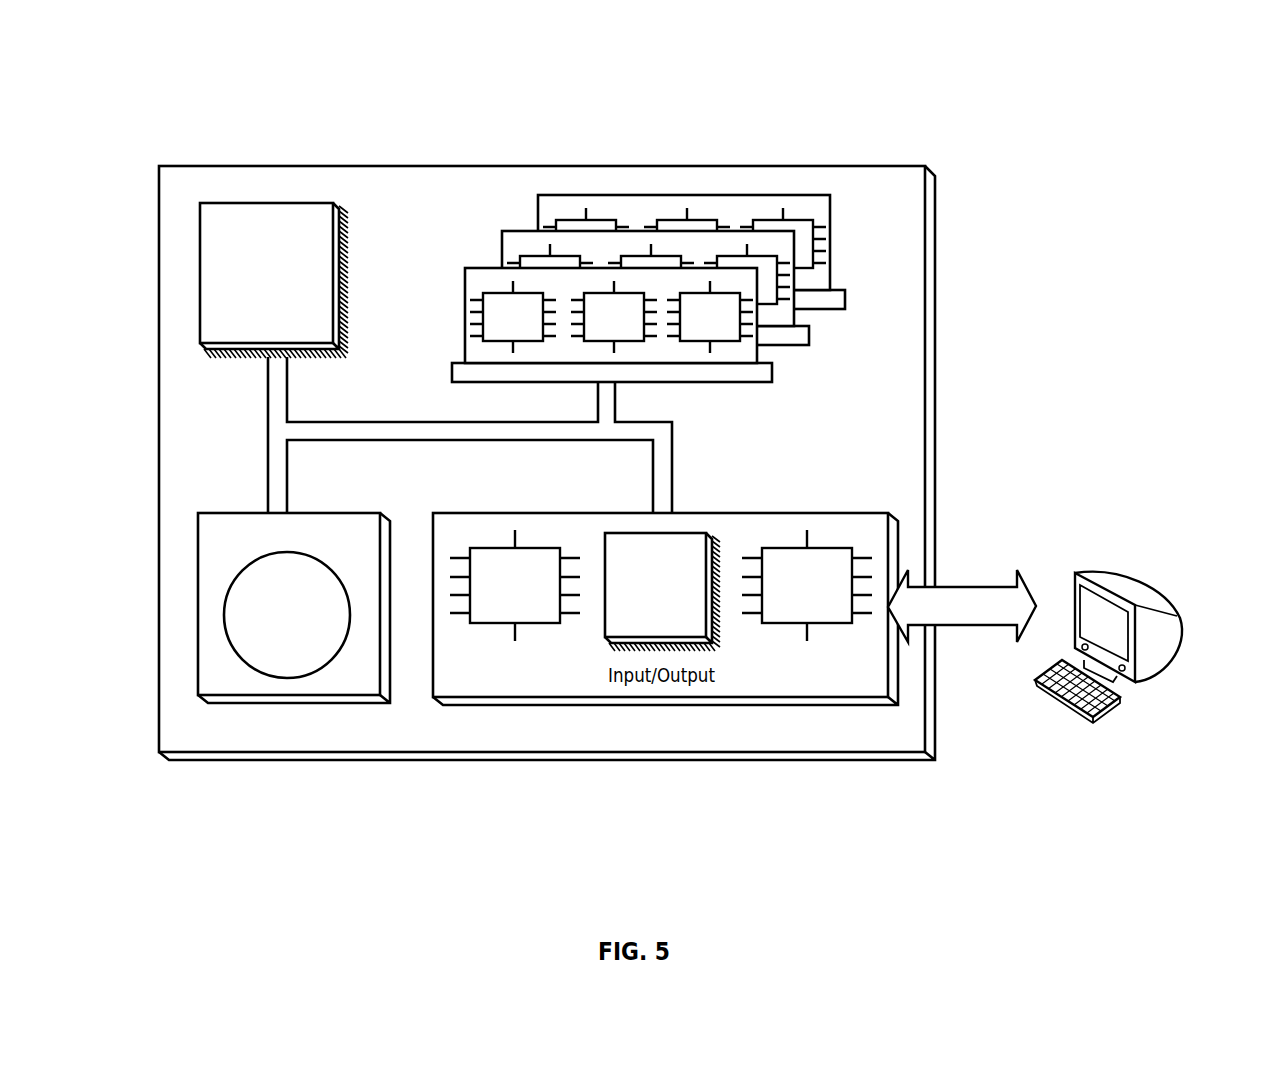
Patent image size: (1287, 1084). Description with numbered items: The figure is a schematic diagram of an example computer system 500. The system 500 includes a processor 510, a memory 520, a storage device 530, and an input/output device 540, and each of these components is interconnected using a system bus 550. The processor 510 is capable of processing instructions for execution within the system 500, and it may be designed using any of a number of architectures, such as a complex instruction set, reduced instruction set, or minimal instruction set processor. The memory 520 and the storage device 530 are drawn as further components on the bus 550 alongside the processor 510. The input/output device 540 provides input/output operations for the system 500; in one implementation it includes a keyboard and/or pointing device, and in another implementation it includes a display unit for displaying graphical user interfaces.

The computer system 500 is at (190, 86).
The processor 510 is at (314, 331).
The memory 520 is at (823, 319).
The storage device 530 is at (369, 688).
The input/output device 540 is at (1078, 577).
The system bus 550 is at (428, 433).